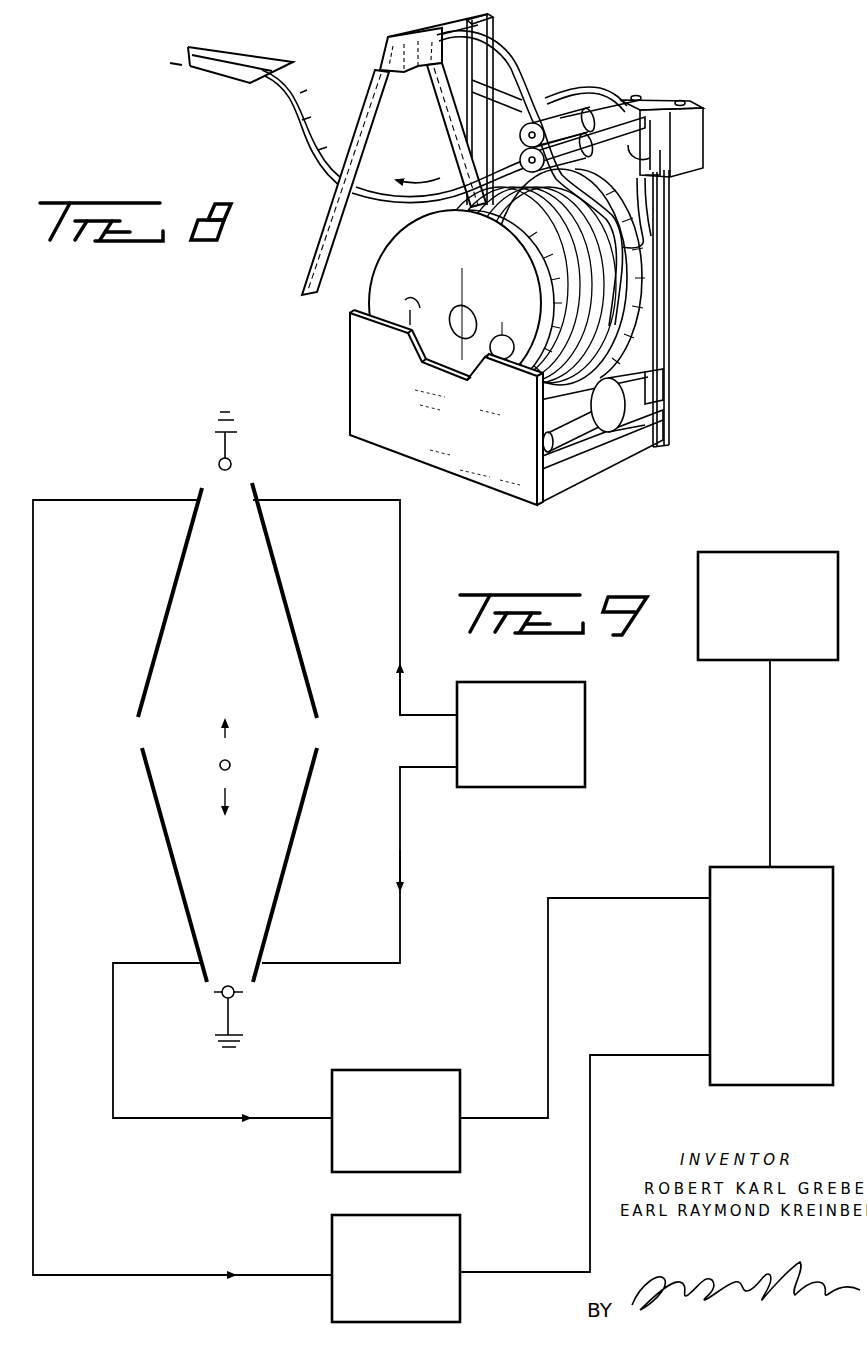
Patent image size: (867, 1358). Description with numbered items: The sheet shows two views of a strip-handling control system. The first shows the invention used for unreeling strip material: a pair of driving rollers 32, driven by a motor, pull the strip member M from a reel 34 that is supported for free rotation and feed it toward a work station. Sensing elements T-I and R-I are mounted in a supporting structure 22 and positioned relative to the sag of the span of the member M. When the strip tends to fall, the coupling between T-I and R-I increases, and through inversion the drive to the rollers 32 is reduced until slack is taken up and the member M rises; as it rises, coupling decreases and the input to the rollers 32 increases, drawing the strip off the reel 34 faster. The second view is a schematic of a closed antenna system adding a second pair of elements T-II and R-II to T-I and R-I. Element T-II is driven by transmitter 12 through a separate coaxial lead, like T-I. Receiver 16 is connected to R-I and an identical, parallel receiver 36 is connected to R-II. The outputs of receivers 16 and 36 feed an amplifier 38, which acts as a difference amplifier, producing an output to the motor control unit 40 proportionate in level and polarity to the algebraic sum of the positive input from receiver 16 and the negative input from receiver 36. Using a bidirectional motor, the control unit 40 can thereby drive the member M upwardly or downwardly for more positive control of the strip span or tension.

In FIG. 9, the transmitter 12 is at (586, 716).
In FIG. 9, the receiver 16 is at (424, 1078).
In FIG. 8, the supporting structure 22 is at (421, 58).
In FIG. 8, the driving rollers 32 is at (545, 142).
In FIG. 8, the reel 34 is at (387, 296).
In FIG. 9, the receiver 36 is at (445, 1230).
In FIG. 9, the amplifier 38 is at (728, 875).
In FIG. 9, the motor control unit 40 is at (832, 557).
In FIG. 8, the member M is at (618, 240).
In FIG. 9, the member M is at (231, 763).
In FIG. 8, the sensing element T-I is at (337, 218).
In FIG. 9, the sensing element T-I is at (285, 860).
In FIG. 8, the sensing element R-I is at (447, 116).
In FIG. 9, the sensing element R-I is at (162, 826).
In FIG. 9, the sensing element T-II is at (290, 602).
In FIG. 9, the sensing element R-II is at (170, 609).